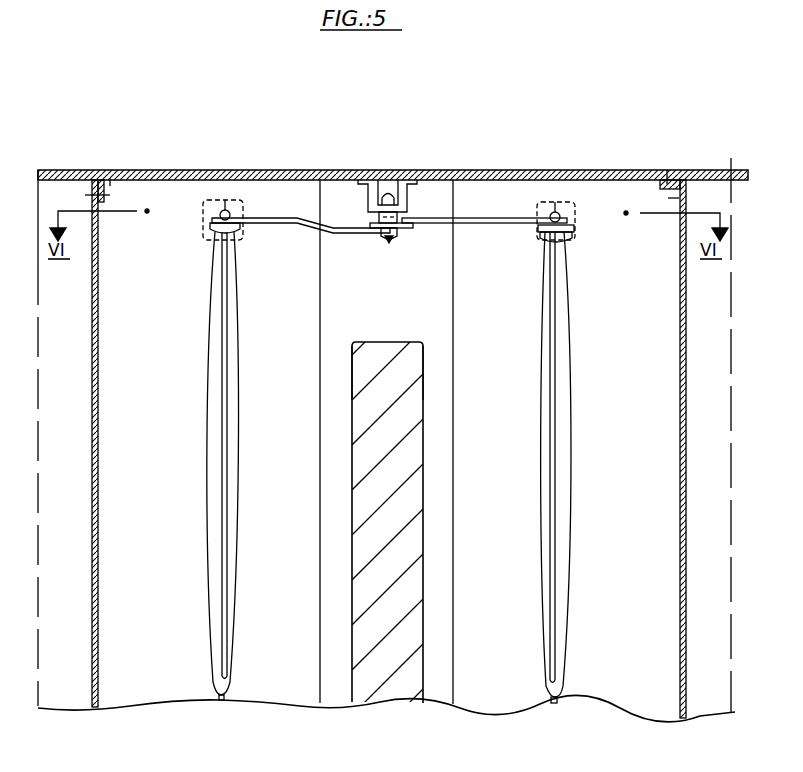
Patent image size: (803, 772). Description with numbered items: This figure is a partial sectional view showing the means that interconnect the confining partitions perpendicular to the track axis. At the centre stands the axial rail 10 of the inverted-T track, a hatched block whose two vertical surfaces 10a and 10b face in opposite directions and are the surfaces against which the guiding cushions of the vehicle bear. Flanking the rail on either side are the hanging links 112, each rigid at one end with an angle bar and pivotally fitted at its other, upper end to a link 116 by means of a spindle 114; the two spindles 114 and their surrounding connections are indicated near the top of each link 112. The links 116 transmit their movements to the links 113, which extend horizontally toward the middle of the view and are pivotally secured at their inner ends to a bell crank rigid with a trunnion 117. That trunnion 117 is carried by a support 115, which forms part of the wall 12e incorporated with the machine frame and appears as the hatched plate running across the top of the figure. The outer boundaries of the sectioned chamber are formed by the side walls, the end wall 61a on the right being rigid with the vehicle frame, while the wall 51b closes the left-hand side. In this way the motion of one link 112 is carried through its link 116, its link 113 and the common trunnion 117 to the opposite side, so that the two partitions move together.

The axial rail 10 is at (404, 452).
The vertical surface 10a is at (424, 363).
The vertical surface 10b is at (352, 368).
The wall 12e is at (533, 179).
The side wall 51b is at (98, 420).
The end wall 61a is at (681, 536).
The link 112 is at (211, 345).
The link 113 is at (296, 226).
The spindle 114 is at (230, 212).
The support 115 is at (407, 184).
The link 116 is at (205, 227).
The trunnion 117 is at (393, 238).